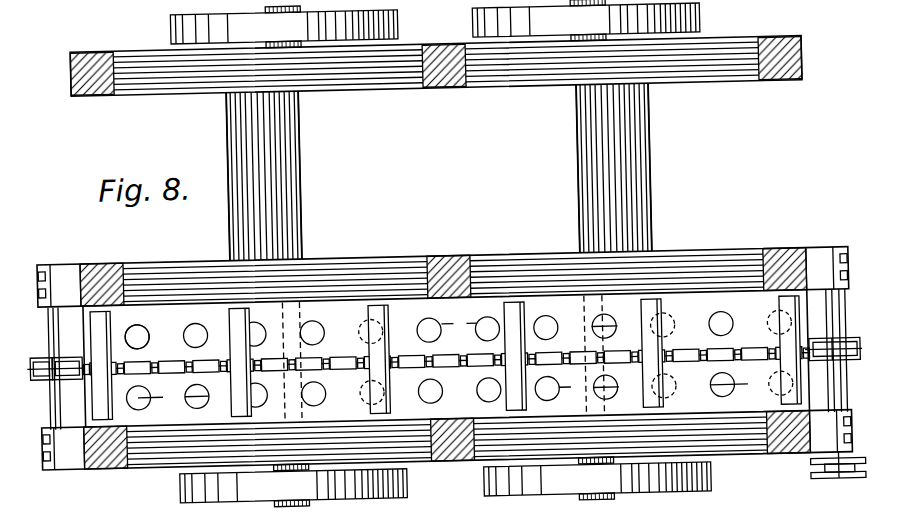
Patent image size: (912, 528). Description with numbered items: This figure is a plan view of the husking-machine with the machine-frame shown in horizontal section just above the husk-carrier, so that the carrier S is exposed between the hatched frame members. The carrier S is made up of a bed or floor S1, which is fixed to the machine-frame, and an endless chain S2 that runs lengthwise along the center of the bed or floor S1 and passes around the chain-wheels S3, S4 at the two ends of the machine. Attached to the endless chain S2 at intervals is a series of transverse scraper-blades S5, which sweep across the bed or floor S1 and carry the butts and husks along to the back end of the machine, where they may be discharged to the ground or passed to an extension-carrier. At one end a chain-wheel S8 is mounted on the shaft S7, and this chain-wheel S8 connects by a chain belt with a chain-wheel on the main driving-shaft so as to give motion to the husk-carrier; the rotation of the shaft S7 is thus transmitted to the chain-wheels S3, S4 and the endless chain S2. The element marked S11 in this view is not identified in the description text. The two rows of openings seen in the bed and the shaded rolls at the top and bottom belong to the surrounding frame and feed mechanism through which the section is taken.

The carrier S is at (436, 360).
The bed or floor S1 is at (150, 350).
The endless chain S2 is at (360, 365).
The chain-wheel S3 is at (825, 356).
The chain-wheel S4 is at (55, 359).
The scraper-blades S5 is at (240, 384).
The hidden holes S11 is at (672, 348).
The shaft S7 is at (842, 403).
The chain-wheel S8 is at (832, 497).